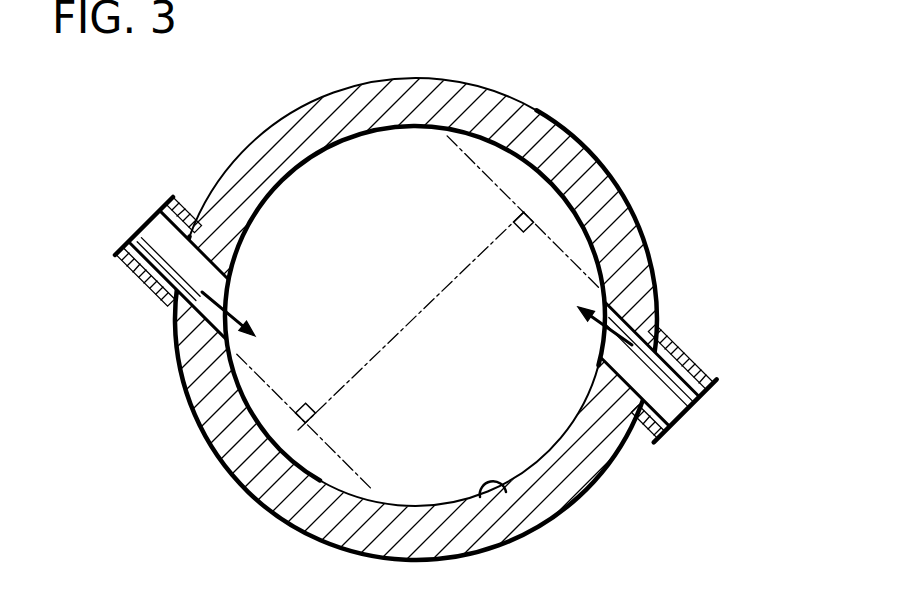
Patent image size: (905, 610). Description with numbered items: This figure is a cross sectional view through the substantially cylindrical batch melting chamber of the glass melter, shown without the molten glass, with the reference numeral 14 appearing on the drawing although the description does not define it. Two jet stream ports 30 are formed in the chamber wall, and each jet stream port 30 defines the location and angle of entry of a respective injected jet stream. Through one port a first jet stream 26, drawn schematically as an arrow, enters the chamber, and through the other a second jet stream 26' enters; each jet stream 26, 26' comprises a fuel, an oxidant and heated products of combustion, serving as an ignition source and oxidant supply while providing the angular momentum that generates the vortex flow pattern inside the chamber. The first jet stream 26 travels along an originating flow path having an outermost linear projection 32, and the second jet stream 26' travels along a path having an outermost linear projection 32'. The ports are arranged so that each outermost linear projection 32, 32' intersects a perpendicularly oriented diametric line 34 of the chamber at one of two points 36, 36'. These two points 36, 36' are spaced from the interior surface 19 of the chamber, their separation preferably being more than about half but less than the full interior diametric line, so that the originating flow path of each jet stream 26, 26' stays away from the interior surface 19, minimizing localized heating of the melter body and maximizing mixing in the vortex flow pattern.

The vessel / reactor wall 14 is at (598, 128).
The interior surface 19 is at (506, 492).
The first jet stream 26 is at (714, 407).
The second jet stream 26' is at (144, 185).
The jet stream port 30 is at (680, 357).
The outermost linear projection 32 is at (523, 227).
The outermost linear projection 32' is at (304, 392).
The perpendicularly oriented diametric line 34 is at (417, 313).
The intersection point 36 is at (478, 208).
The intersection point 36' is at (362, 415).